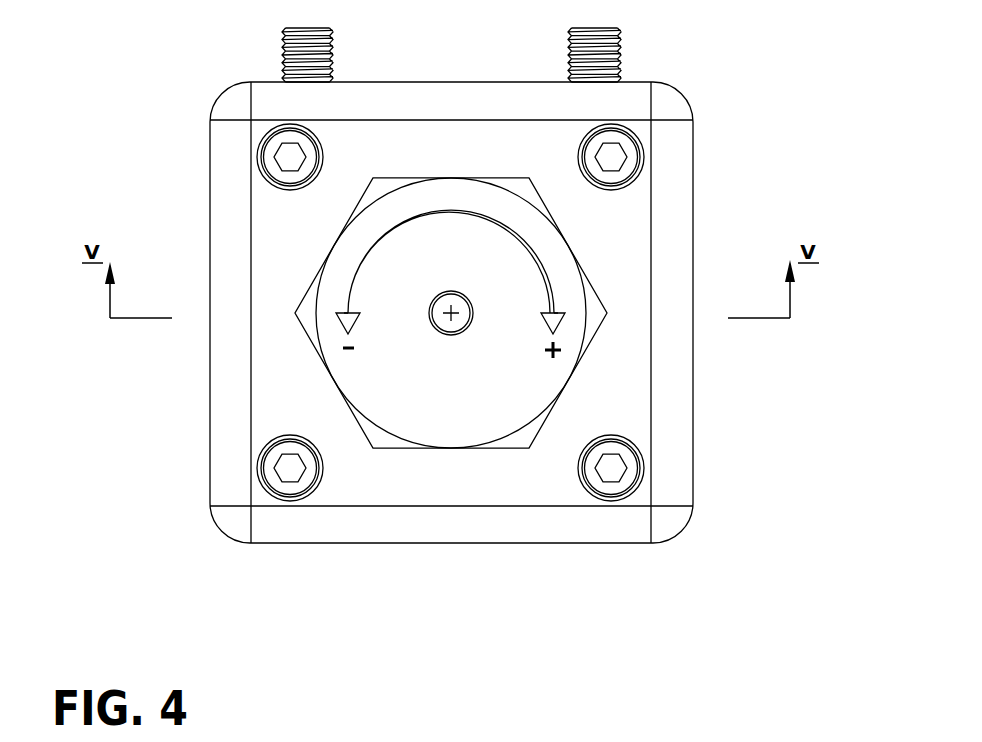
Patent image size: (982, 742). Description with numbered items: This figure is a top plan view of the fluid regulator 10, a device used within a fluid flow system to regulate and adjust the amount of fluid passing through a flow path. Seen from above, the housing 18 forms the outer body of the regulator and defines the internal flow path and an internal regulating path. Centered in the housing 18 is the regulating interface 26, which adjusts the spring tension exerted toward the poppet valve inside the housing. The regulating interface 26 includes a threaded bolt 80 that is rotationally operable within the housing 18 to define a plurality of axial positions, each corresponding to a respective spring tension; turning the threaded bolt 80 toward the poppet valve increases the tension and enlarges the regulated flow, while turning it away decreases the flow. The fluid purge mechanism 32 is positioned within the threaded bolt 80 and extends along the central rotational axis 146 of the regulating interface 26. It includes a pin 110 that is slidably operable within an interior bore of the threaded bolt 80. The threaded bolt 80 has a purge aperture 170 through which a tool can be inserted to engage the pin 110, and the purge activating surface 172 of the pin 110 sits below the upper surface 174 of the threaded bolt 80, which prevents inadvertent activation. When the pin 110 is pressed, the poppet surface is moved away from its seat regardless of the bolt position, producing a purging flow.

The fluid regulator 10 is at (726, 158).
The housing 18 is at (210, 99).
The regulating interface 26 is at (312, 235).
The fluid purge mechanism 32 is at (488, 309).
The threaded bolt 80 is at (318, 353).
The pin 110 is at (453, 280).
The central rotational axis 146 is at (435, 326).
The purge aperture 170 is at (468, 298).
The purge activating surface 172 is at (468, 326).
The upper surface 174 is at (472, 431).